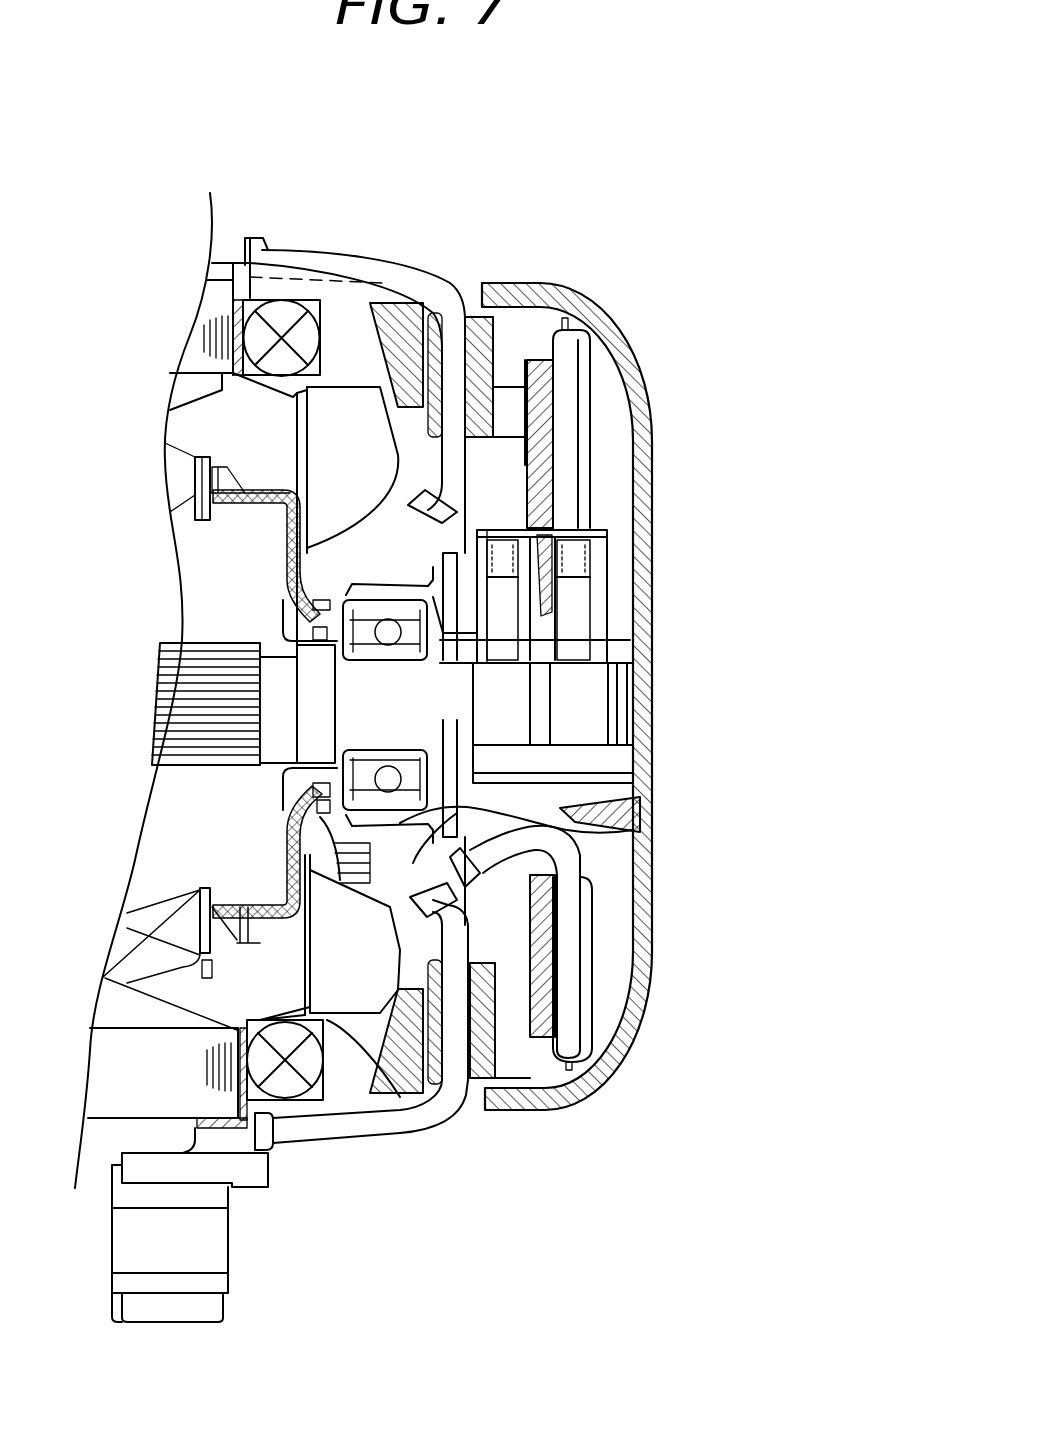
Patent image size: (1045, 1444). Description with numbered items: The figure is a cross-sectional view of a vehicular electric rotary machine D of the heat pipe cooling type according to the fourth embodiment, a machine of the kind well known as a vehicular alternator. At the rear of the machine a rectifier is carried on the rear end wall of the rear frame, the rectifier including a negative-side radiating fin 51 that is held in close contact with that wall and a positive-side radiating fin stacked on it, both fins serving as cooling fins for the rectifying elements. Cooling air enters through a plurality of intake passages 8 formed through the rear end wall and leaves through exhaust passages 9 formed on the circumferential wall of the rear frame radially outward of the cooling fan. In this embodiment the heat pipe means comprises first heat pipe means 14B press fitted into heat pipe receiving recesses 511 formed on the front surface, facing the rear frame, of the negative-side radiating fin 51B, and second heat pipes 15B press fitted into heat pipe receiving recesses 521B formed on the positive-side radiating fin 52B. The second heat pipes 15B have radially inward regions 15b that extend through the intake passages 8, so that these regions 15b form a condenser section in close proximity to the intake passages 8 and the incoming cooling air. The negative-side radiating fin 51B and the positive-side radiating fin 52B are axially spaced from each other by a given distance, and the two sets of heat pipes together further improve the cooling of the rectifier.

The electric rotary machine D is at (650, 338).
The heat pipe receiving recesses 511 is at (462, 378).
The negative-side radiating fin 51 is at (487, 343).
The positive-side radiating fin 52B is at (547, 445).
The intake passages 8 is at (636, 845).
The radially inward regions 15b is at (490, 857).
The negative-side radiating fin 51B is at (477, 967).
The heat pipe receiving recesses 521B is at (557, 977).
The second heat pipes 15B is at (570, 1050).
The exhaust passages 9 is at (333, 1100).
The first heat pipe means 14B is at (388, 1120).